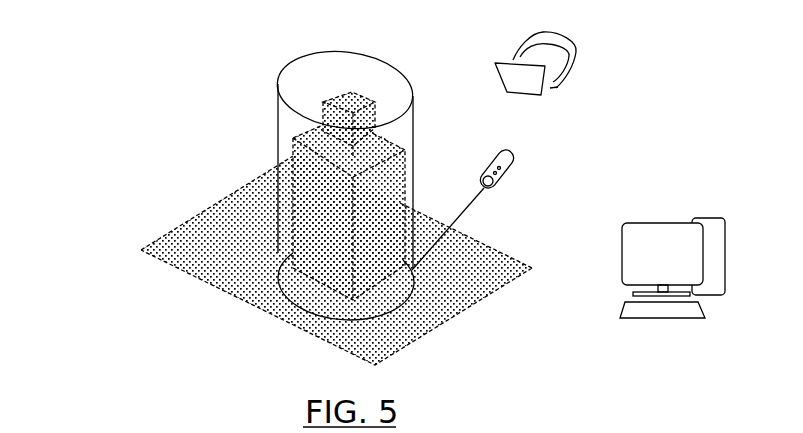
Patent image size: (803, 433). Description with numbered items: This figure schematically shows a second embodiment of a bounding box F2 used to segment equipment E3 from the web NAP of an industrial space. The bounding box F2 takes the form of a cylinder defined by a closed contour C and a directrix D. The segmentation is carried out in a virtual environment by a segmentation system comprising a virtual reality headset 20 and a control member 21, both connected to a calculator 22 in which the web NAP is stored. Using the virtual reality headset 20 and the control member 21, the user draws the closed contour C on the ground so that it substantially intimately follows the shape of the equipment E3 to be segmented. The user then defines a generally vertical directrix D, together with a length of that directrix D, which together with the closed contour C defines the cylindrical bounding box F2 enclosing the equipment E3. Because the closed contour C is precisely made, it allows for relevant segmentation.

The web NAP is at (186, 243).
The bounding box F2 is at (275, 135).
The directrix D is at (277, 210).
The equipment E3 is at (353, 93).
The closed contour C is at (410, 312).
The virtual reality headset 20 is at (560, 82).
The control member 21 is at (507, 168).
The calculator 22 is at (665, 223).